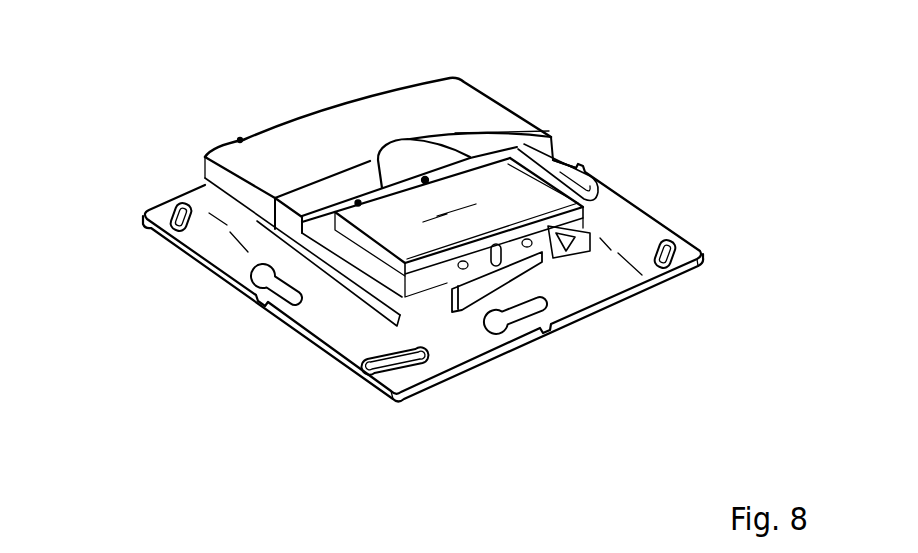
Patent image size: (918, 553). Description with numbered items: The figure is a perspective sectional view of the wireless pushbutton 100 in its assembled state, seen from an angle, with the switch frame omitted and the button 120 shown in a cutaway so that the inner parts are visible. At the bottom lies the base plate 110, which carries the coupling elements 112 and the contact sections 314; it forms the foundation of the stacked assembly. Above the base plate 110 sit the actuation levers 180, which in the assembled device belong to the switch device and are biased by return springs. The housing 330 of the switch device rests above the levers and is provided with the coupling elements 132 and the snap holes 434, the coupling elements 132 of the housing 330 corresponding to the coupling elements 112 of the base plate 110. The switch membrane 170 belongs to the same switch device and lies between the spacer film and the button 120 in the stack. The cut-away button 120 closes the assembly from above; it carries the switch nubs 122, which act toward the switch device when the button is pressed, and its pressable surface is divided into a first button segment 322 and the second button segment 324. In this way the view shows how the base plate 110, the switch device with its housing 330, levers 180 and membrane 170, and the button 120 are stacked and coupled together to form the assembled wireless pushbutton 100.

The wireless pushbutton 100 is at (376, 235).
The base plate 110 is at (178, 246).
The coupling elements 112 is at (492, 334).
The button 120 is at (374, 159).
The switch nubs 122 is at (358, 200).
The coupling elements 132 is at (500, 262).
The switch membrane 170 is at (495, 235).
The actuation lever 180 is at (365, 262).
The contact sections 314 is at (330, 262).
The first button segments 322 is at (310, 142).
The second button segment 324 is at (372, 158).
The housing 330 is at (589, 236).
The snap holes 434 is at (545, 262).